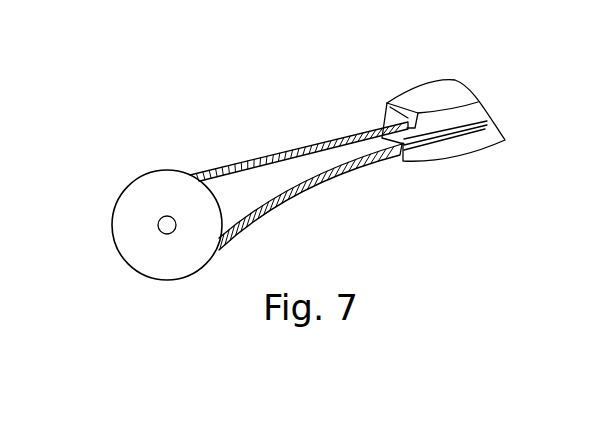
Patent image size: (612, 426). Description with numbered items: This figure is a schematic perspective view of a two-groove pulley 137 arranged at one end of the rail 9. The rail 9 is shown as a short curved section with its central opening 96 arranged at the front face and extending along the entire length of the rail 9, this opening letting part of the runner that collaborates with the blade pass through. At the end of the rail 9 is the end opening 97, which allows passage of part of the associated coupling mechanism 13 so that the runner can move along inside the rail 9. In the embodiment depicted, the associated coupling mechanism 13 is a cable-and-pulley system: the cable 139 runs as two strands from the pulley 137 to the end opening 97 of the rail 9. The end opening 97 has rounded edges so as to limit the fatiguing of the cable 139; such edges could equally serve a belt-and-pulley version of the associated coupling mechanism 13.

The rail 9 is at (449, 71).
The associated coupling mechanism 13 is at (93, 214).
The central opening 96 is at (463, 138).
The end opening 97 is at (386, 100).
The pulley 137 is at (164, 260).
The cable 139 is at (295, 152).